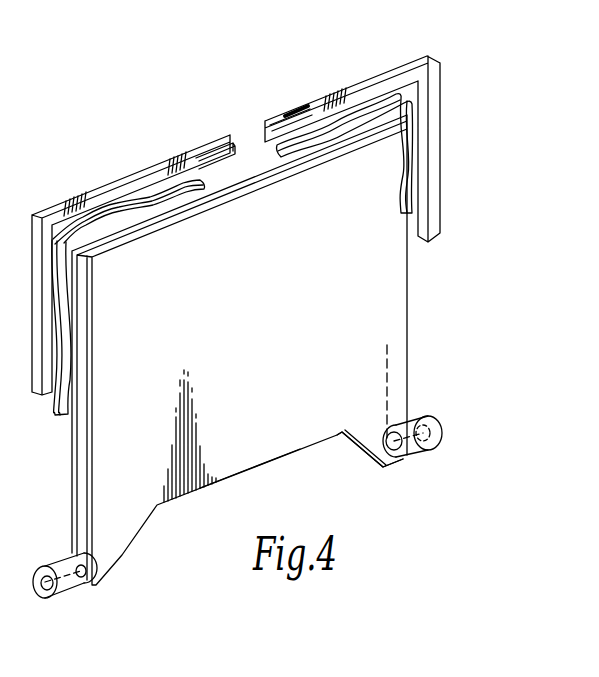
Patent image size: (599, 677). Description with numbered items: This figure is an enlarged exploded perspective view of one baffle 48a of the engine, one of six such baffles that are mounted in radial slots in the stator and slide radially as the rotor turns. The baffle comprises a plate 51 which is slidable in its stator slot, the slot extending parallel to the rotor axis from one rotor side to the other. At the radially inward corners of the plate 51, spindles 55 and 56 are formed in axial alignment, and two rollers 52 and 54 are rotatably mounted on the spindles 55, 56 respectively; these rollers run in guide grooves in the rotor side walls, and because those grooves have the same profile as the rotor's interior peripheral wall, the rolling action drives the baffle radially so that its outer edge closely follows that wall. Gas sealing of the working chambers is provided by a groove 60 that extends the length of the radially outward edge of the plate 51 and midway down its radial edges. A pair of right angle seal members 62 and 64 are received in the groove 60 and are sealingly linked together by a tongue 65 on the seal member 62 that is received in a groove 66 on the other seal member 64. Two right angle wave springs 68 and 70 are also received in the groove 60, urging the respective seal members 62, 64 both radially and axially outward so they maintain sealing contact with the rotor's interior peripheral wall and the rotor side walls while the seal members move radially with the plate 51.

The baffle 48a is at (313, 420).
The plate 51 is at (252, 423).
The roller 52 is at (86, 583).
The roller 54 is at (437, 450).
The spindle 55 is at (47, 590).
The spindle 56 is at (410, 458).
The groove 60 is at (238, 187).
The right angle seal member 62 is at (157, 166).
The right angle seal member 64 is at (339, 97).
The tongue 65 is at (205, 158).
The groove 66 is at (284, 116).
The right angle wave spring 68 is at (57, 393).
The right angle wave spring 70 is at (406, 207).